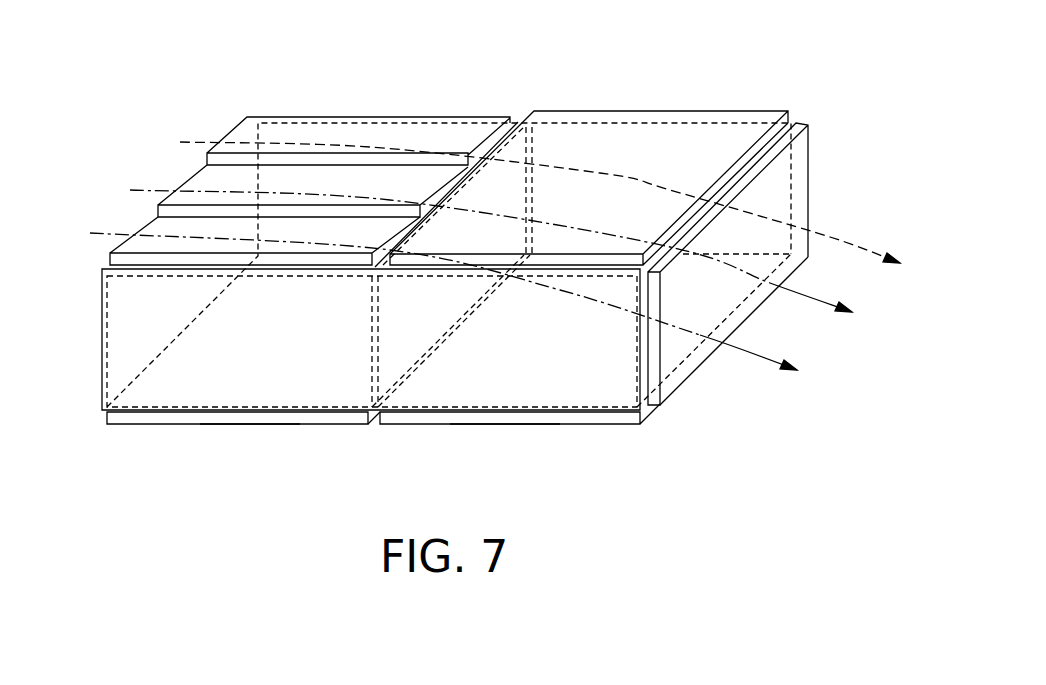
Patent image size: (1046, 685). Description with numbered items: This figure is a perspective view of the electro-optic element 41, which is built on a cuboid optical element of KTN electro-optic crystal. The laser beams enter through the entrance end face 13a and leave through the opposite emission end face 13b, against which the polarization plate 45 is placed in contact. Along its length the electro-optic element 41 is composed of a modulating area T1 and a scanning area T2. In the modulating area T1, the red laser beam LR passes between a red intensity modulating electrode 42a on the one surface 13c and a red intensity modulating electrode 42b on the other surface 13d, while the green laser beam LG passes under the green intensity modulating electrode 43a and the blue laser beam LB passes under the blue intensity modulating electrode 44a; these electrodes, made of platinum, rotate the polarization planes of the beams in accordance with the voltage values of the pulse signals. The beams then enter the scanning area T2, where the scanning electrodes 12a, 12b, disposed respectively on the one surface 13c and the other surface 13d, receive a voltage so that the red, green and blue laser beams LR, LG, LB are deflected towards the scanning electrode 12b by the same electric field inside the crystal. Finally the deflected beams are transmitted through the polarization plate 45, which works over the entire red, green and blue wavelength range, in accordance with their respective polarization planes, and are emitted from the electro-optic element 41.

The electro-optic element 41 is at (752, 63).
The scanning electrode 12a is at (597, 112).
The scanning electrode 12b is at (611, 426).
The entrance end face 13a is at (100, 328).
The emission end face 13b is at (803, 127).
The one surface 13c is at (518, 118).
The other surface 13d is at (377, 426).
The red intensity modulating electrode 42a is at (148, 224).
The red intensity modulating electrode 42b is at (122, 421).
The green intensity modulating electrode 43a is at (198, 168).
The blue intensity modulating electrode 44a is at (245, 120).
The polarization plate 45 is at (683, 387).
The modulating area T1 is at (235, 413).
The scanning area T2 is at (495, 413).
The blue laser beam LB is at (832, 238).
The green laser beam LG is at (800, 293).
The red laser beam LR is at (737, 348).